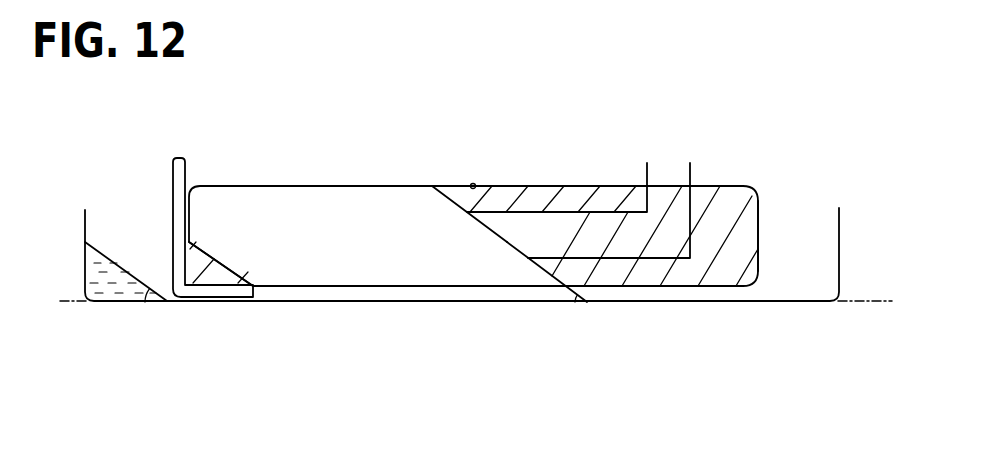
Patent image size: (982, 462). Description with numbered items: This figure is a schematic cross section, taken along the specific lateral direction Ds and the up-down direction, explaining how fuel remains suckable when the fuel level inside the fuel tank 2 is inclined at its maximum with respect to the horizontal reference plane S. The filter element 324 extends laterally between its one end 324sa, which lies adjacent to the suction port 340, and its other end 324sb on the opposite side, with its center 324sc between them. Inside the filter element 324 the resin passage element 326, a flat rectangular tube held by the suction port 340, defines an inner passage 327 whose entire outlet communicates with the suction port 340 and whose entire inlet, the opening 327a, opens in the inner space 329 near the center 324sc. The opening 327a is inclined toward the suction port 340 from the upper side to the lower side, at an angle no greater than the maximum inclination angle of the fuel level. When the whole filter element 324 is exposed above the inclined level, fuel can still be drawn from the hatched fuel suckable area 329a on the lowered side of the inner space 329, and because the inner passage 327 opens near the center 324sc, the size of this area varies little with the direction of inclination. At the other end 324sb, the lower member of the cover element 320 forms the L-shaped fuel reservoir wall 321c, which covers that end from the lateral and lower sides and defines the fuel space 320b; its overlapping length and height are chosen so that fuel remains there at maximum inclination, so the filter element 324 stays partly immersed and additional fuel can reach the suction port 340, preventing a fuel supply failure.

The fuel tank 2 is at (840, 223).
The horizontal reference plane S is at (862, 304).
The cover element 320 is at (199, 193).
The fuel reservoir wall 321c is at (180, 161).
The fuel space 320b is at (211, 257).
The filter element 324 is at (390, 287).
The other end of the filter element 324sb is at (186, 243).
The center of the filter element 324sc is at (473, 186).
The one end of the filter element 324sa is at (760, 233).
The inner space of the filter element 329 is at (283, 284).
The fuel suckable area 329a is at (467, 204).
The inner passage 327 is at (662, 253).
The opening of the inner passage 327a is at (508, 243).
The passage element 326 is at (568, 210).
The suction port 340 is at (692, 170).
The specific lateral direction Ds is at (517, 403).